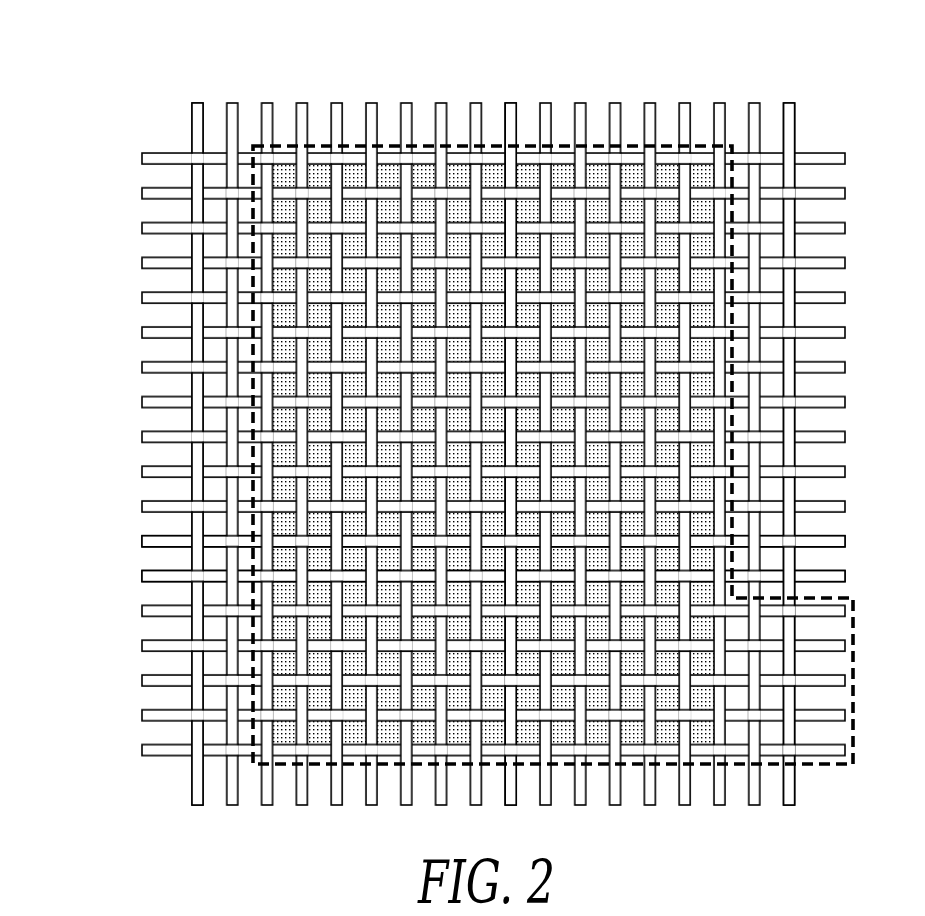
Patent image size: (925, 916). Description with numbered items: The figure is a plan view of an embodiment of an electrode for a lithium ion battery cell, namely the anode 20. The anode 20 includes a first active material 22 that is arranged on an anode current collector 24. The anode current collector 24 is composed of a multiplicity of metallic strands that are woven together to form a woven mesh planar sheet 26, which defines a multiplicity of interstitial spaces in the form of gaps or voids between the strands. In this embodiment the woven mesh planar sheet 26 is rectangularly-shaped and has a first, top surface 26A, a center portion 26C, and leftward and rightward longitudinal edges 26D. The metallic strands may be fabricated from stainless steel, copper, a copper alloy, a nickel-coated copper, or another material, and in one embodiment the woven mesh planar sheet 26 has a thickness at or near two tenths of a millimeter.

The anode 20 is at (463, 406).
The first active material 22 is at (300, 542).
The anode current collector 24 is at (437, 606).
The woven mesh planar sheet 26 is at (195, 576).
The top surface 26A is at (700, 213).
The center portion 26C is at (509, 92).
The longitudinal edges 26D is at (199, 92).